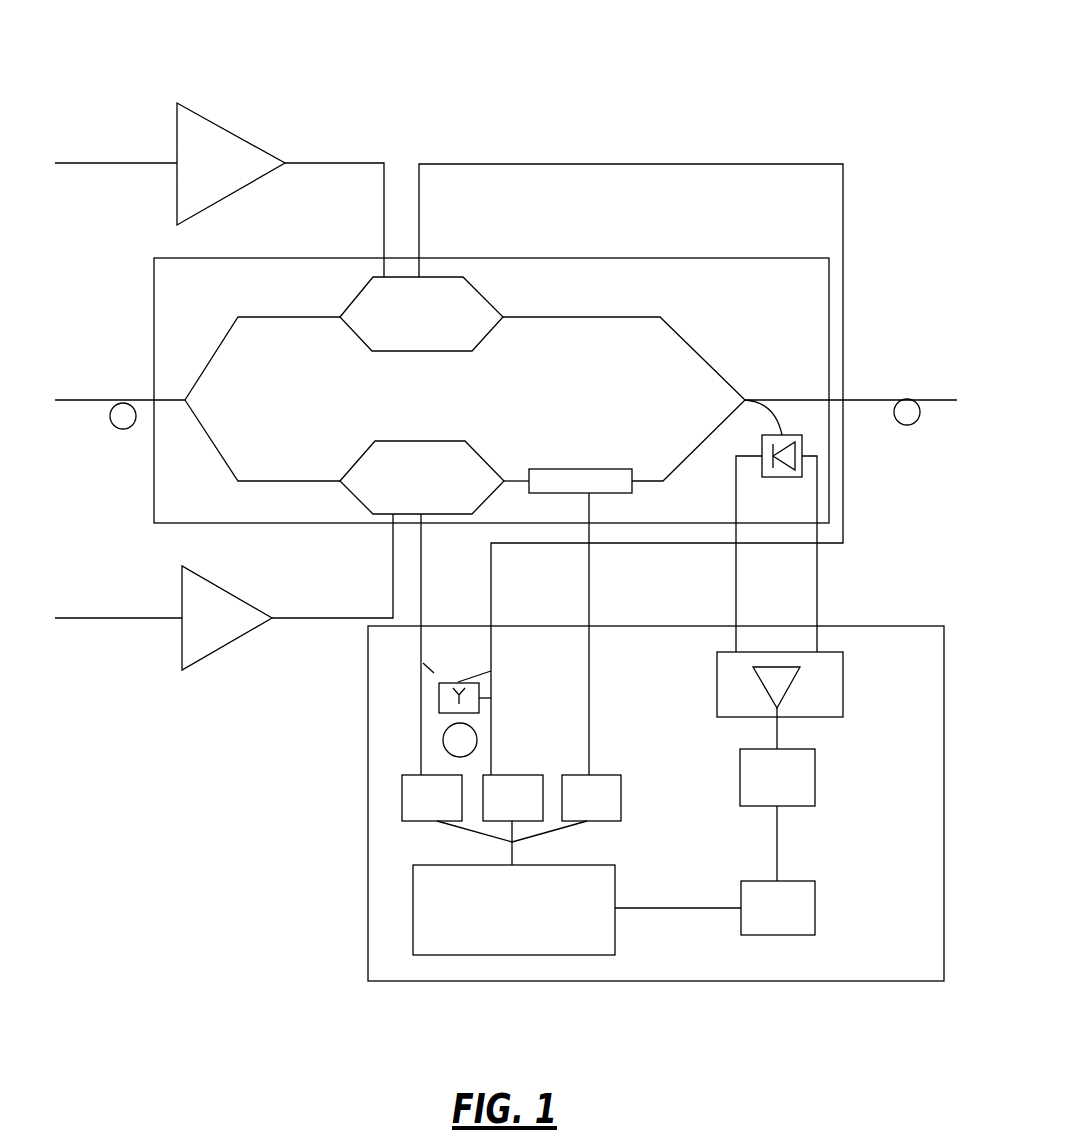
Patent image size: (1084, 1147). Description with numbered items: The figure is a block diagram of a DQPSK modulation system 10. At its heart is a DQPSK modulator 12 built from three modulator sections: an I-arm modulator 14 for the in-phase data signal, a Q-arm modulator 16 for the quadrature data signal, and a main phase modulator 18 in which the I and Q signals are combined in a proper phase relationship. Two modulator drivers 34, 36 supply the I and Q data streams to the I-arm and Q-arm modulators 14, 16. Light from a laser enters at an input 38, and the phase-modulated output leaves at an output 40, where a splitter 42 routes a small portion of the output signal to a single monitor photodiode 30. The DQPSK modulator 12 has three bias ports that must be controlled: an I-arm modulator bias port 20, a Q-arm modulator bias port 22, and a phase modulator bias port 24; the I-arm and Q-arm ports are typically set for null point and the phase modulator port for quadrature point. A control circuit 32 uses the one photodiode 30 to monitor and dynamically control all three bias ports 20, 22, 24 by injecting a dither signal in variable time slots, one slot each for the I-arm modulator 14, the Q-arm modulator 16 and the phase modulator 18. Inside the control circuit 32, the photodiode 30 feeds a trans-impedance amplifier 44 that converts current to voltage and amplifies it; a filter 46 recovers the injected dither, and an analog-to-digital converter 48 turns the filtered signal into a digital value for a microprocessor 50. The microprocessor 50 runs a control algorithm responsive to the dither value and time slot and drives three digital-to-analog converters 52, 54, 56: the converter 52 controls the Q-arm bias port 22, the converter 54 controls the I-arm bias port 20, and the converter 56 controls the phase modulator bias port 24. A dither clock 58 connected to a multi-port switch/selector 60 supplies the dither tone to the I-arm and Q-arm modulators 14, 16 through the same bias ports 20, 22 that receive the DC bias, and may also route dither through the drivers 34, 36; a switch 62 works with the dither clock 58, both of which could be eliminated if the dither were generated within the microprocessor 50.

The DQPSK modulation system 10 is at (523, 66).
The DQPSK modulator 12 is at (633, 256).
The I-arm modulator 14 is at (357, 340).
The Q-arm modulator 16 is at (358, 458).
The main phase modulator 18 is at (580, 469).
The I-arm modulator bias port 20 is at (420, 246).
The Q-arm modulator bias port 22 is at (423, 551).
The phase modulator bias port 24 is at (590, 505).
The photodiode 30 is at (803, 449).
The control circuit 32 is at (368, 803).
The modulator driver 34 is at (230, 128).
The modulator driver 36 is at (225, 643).
The input 38 is at (102, 400).
The output 40 is at (887, 397).
The splitter 42 is at (781, 430).
The trans-impedance amplifier 44 is at (843, 683).
The filter 46 is at (815, 778).
The analog-to-digital converter 48 is at (815, 907).
The microprocessor 50 is at (615, 927).
The digital-to-analog converter 52 is at (412, 822).
The digital-to-analog converter 54 is at (512, 775).
The digital-to-analog converter 56 is at (621, 796).
The dither clock 58 is at (442, 740).
The multi-port switch/selector 60 is at (492, 698).
The switch 62 is at (435, 673).